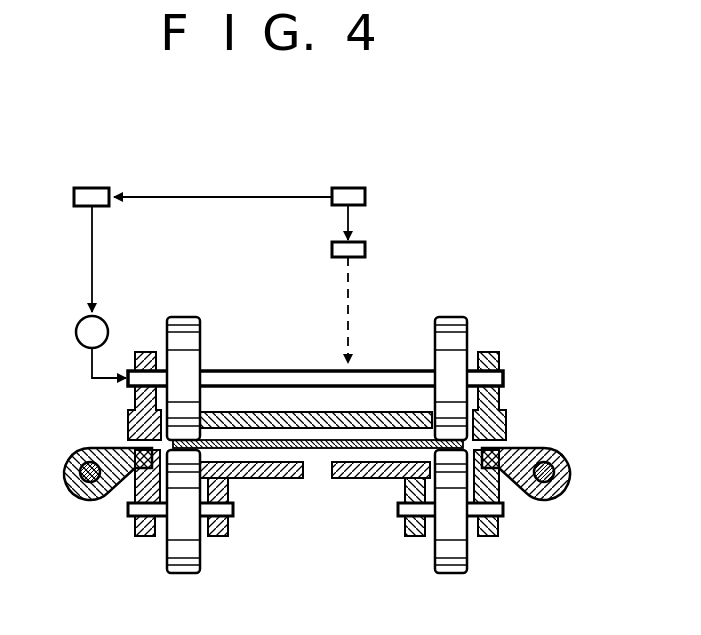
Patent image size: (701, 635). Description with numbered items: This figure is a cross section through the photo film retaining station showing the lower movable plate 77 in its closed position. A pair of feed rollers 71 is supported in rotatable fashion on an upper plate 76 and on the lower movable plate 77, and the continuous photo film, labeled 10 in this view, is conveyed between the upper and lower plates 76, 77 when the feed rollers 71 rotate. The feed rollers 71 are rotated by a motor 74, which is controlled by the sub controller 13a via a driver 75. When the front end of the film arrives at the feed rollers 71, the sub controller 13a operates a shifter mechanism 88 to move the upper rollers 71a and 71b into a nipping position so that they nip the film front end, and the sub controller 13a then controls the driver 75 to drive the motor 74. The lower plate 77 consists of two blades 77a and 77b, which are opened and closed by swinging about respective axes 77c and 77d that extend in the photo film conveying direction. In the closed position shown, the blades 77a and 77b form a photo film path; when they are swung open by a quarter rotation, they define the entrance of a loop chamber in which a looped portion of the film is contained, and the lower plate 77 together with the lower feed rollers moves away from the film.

The driver 75 is at (90, 187).
The sub controller 13a is at (346, 187).
The shifter mechanism 88 is at (366, 250).
The motor 74 is at (104, 322).
The feed rollers 71 is at (496, 403).
The upper roller 71a is at (462, 340).
The upper roller 71b is at (187, 316).
The sheet 10 is at (252, 440).
The upper plate 76 is at (305, 420).
The lower movable plate 77 is at (316, 529).
The blade 77a is at (347, 479).
The blade 77b is at (267, 479).
The axis 77c is at (556, 488).
The axis 77d is at (79, 496).